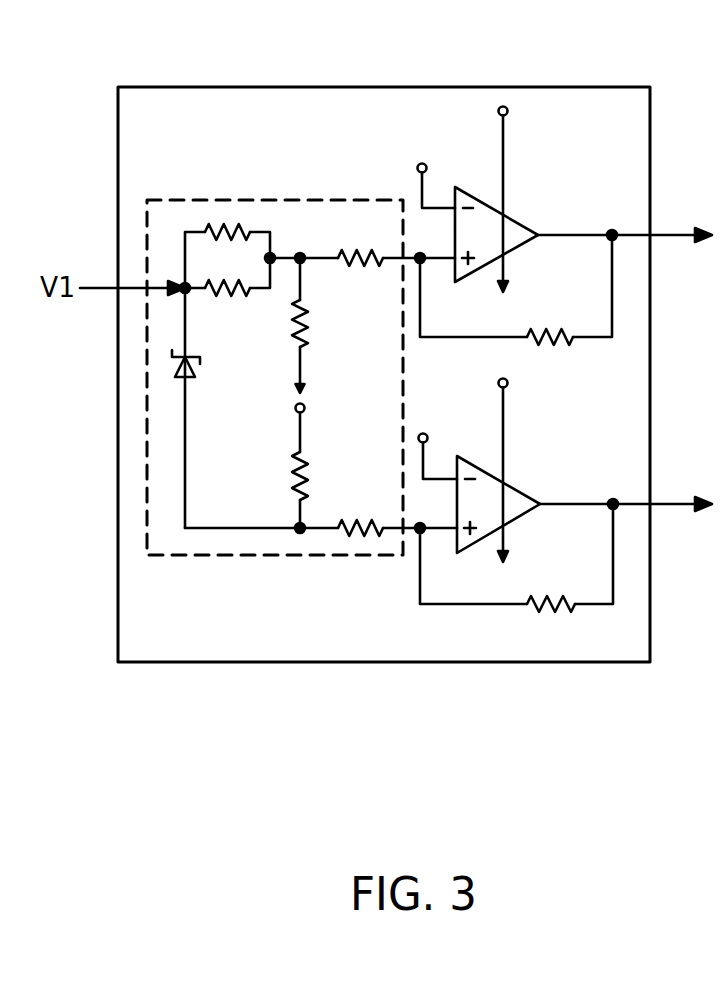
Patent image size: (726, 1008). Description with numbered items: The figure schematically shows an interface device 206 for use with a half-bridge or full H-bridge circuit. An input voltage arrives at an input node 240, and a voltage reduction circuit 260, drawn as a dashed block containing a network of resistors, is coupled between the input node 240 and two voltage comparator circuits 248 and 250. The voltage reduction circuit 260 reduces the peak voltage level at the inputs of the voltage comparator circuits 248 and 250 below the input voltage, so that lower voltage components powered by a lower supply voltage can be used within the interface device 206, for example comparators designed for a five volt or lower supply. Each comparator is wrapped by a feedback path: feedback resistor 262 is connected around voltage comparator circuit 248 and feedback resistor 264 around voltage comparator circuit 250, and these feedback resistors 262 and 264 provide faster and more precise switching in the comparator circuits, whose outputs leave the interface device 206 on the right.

The interface device 206 is at (573, 87).
The voltage reduction circuit 260 is at (207, 200).
The input node 240 is at (188, 292).
The voltage comparator circuit 248 is at (510, 264).
The feedback resistor 262 is at (555, 346).
The voltage comparator circuit 250 is at (511, 528).
The feedback resistor 264 is at (553, 612).